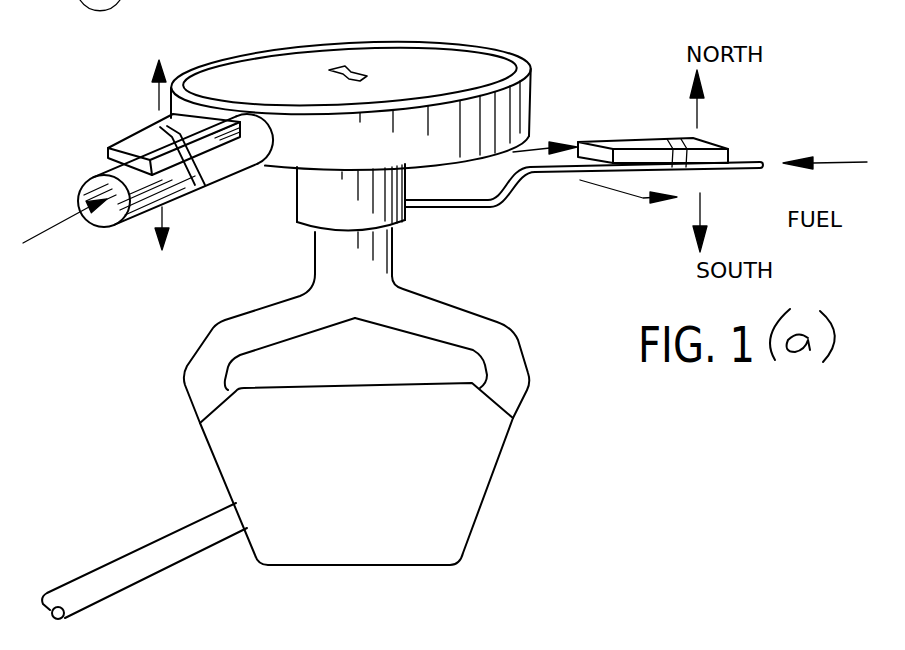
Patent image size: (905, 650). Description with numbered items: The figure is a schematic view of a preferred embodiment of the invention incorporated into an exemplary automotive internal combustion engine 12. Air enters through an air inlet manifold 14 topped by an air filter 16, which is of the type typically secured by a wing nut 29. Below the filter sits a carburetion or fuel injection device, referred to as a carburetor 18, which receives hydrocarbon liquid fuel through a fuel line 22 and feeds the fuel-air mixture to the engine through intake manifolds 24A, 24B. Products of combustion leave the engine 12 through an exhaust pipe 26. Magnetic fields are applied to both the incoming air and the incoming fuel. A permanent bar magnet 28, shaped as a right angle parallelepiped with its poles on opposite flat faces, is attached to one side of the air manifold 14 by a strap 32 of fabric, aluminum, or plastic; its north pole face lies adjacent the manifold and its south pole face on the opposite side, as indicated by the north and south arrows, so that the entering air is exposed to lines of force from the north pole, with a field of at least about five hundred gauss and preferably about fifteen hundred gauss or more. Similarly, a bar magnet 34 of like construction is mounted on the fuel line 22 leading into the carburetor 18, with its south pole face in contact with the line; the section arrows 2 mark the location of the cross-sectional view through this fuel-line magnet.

The internal combustion engine 12 is at (528, 481).
The air inlet manifold 14 is at (138, 216).
The air filter 16 is at (490, 50).
The carburetor 18 is at (397, 227).
The fuel line 22 is at (529, 184).
The fuel-air mixture intake manifold 24A is at (189, 372).
The fuel-air mixture intake manifold 24B is at (514, 345).
The exhaust pipe 26 is at (155, 540).
The permanent bar magnet 28 is at (122, 143).
The wing nut 29 is at (340, 68).
The strap 32 is at (229, 167).
The bar magnet 34 is at (613, 137).
The section line 2- 2 is at (595, 172).